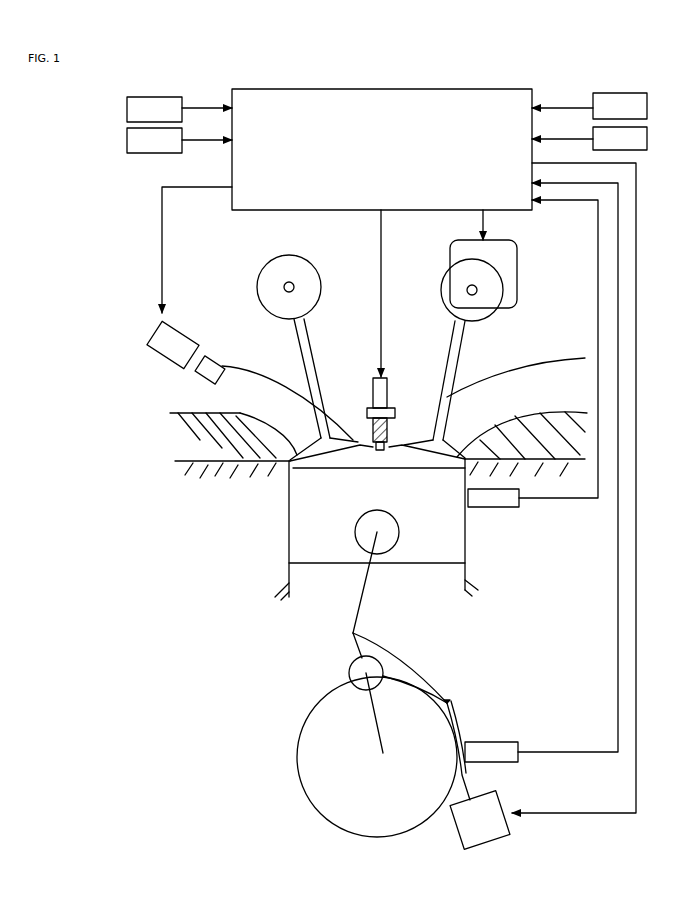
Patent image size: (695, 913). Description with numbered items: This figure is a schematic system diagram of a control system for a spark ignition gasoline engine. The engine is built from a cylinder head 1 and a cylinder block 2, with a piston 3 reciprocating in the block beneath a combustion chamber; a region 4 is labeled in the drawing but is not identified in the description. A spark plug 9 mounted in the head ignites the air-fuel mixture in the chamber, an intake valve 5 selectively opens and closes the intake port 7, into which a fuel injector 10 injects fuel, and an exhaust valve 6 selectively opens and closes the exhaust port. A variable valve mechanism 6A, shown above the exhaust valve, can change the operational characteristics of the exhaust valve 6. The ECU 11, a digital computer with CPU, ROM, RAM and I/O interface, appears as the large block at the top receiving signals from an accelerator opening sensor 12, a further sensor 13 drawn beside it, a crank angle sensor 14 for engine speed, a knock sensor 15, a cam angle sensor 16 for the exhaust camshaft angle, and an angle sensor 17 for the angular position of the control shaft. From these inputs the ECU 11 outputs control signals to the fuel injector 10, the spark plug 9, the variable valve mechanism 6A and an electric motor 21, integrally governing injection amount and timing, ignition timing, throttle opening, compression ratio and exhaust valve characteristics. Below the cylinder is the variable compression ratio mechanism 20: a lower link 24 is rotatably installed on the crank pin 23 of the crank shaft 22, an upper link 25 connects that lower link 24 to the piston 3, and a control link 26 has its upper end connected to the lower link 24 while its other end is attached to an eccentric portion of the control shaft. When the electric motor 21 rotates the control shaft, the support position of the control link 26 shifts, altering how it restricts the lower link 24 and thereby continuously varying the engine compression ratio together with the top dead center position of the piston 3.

The cylinder head 1 is at (525, 463).
The cylinder block 2 is at (475, 555).
The piston 3 is at (468, 530).
The intake port 4 is at (305, 478).
The intake valve 5 is at (312, 345).
The exhaust valve 6 is at (462, 352).
The variable valve mechanism 6A is at (518, 253).
The intake port 7 is at (230, 457).
The spark plug 9 is at (368, 388).
The fuel injector 10 is at (180, 322).
The ECU 11 is at (398, 89).
The accelerator opening sensor 12 is at (618, 93).
The air flow sensor 13 is at (632, 150).
The crank angle sensor 14 is at (500, 742).
The knock sensor 15 is at (503, 507).
The cam angle sensor 16 is at (154, 97).
The angle sensor 17 is at (154, 153).
The variable compression ratio mechanism 20 is at (452, 694).
The electric motor 21 is at (490, 838).
The crank shaft 22 is at (295, 783).
The crank pin 23 is at (349, 662).
The lower link 24 is at (392, 655).
The upper link 25 is at (368, 600).
The control link 26 is at (455, 735).